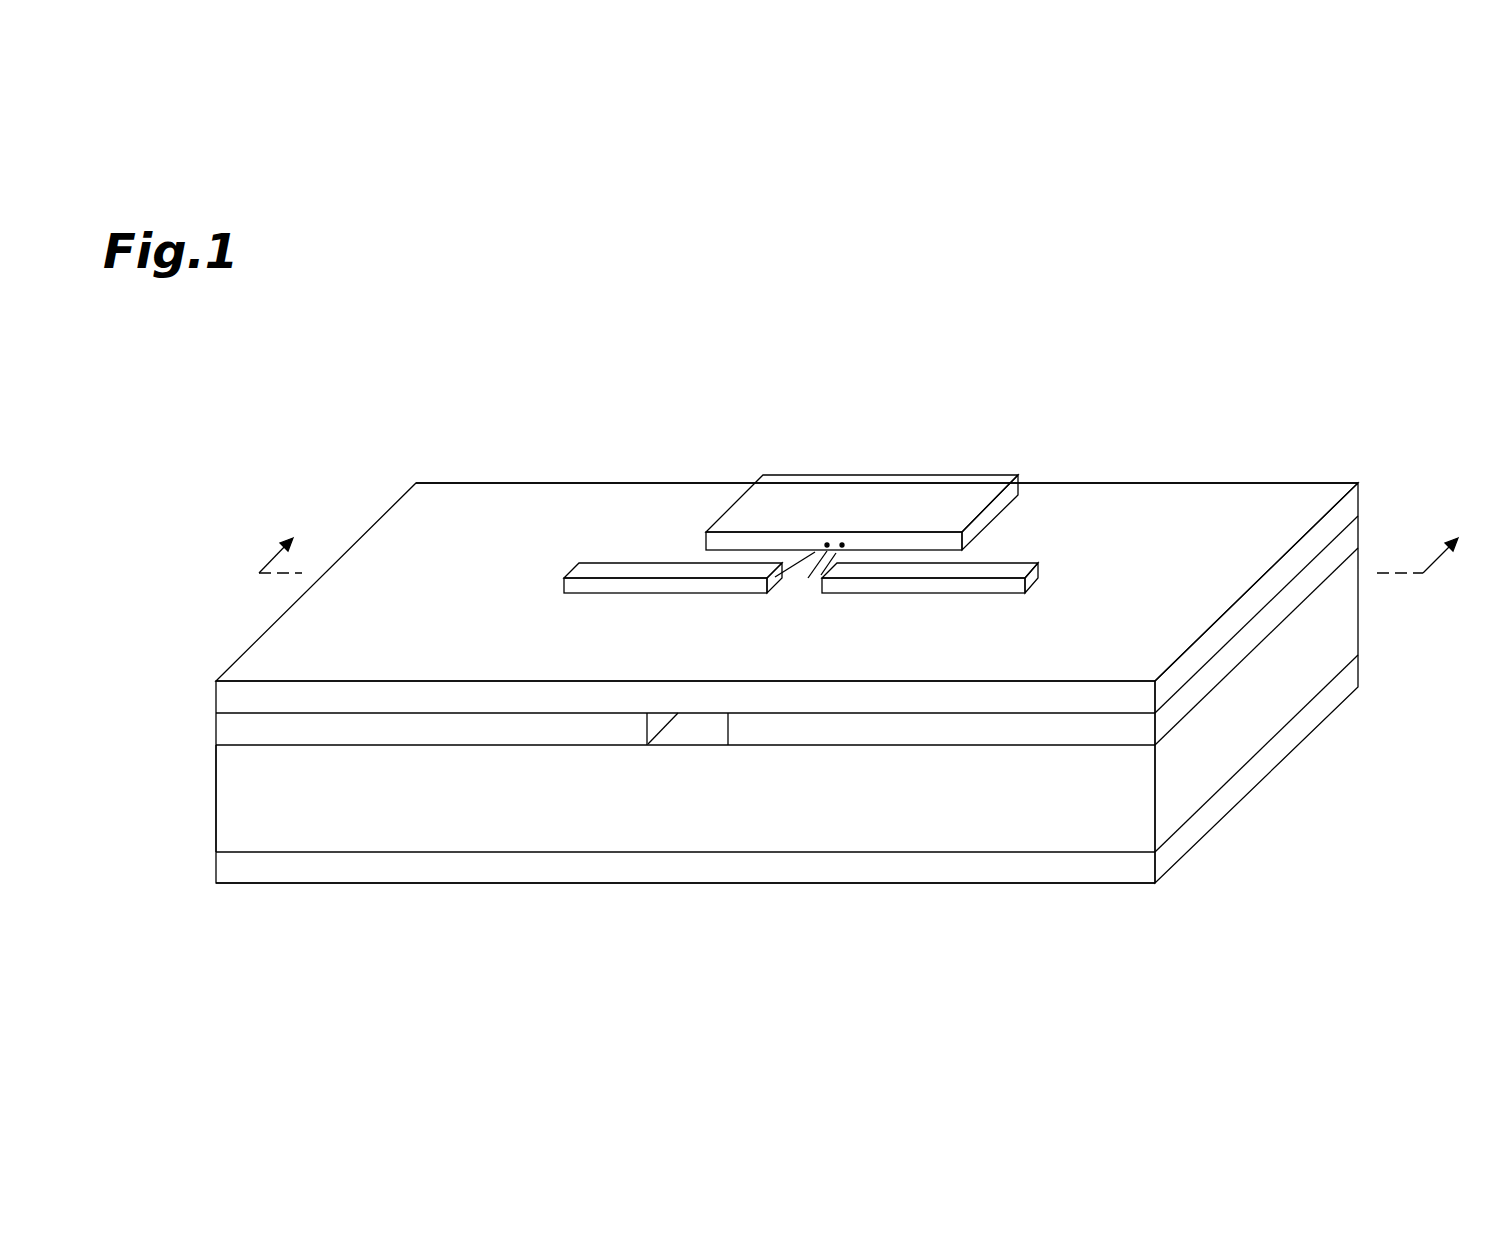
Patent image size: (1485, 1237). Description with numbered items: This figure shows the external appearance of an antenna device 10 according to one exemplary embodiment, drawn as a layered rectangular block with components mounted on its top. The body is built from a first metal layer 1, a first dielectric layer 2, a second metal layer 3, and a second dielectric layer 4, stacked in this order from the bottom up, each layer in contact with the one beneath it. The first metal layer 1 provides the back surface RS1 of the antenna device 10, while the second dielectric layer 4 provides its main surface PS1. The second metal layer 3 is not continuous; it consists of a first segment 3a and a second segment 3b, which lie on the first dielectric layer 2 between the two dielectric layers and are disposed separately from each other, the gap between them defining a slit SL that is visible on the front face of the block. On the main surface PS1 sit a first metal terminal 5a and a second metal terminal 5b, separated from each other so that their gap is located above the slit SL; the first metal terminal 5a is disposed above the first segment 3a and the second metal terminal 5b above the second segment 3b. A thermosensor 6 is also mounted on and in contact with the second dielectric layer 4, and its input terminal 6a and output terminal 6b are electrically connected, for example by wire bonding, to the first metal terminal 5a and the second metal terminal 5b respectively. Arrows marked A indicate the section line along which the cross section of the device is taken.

The antenna device 10 is at (326, 338).
The first metal layer 1 is at (235, 872).
The first dielectric layer 2 is at (235, 788).
The second metal layer 3 is at (235, 732).
The first segment 3a is at (358, 727).
The second segment 3b is at (958, 723).
The second dielectric layer 4 is at (235, 697).
The first metal terminal 5a is at (622, 572).
The second metal terminal 5b is at (1018, 572).
The thermosensor 6 is at (953, 498).
The input terminal 6a is at (827, 545).
The output terminal 6b is at (842, 545).
The slit SL is at (692, 728).
The main surface PS1 is at (478, 503).
The back surface RS1 is at (535, 885).
The line A- A is at (862, 540).